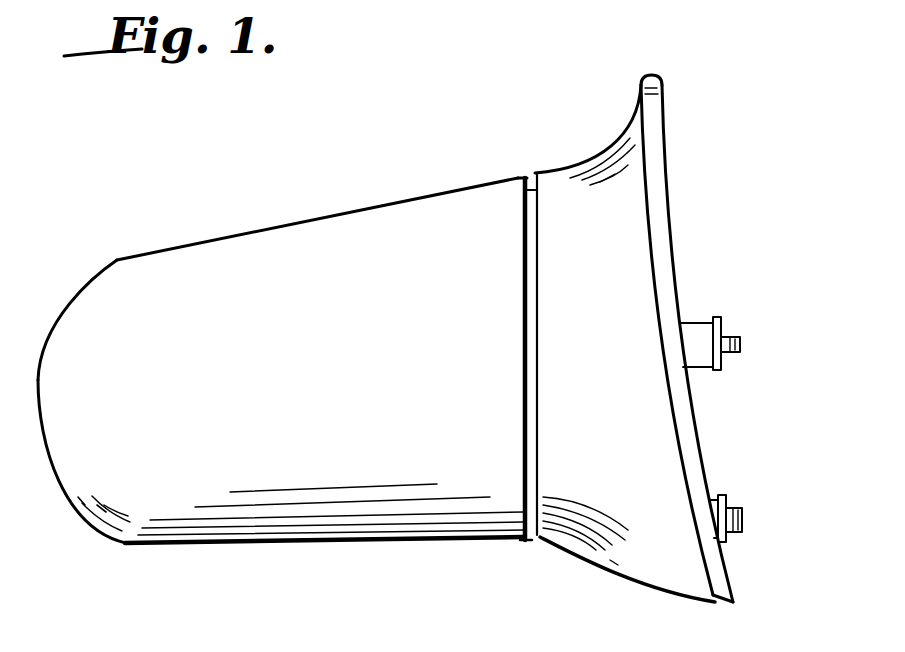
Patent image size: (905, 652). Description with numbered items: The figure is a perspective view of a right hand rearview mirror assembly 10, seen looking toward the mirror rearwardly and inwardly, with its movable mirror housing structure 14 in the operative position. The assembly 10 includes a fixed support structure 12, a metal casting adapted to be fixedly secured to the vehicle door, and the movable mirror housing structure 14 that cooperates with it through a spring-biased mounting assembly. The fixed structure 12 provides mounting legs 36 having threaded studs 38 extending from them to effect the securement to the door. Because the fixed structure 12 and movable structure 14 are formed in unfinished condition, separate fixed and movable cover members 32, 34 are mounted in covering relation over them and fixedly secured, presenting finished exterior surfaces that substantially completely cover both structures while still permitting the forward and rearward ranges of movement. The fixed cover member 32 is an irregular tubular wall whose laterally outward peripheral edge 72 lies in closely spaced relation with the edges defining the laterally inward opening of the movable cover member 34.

The rearview mirror assembly 10 is at (298, 192).
The fixed support structure 12 is at (693, 320).
The movable mirror housing structure 14 is at (530, 540).
The fixed cover member 32 is at (667, 573).
The movable cover member 34 is at (157, 504).
The mounting legs 36 is at (702, 362).
The threaded studs 38 is at (728, 337).
The laterally outward peripheral edge 72 is at (535, 357).